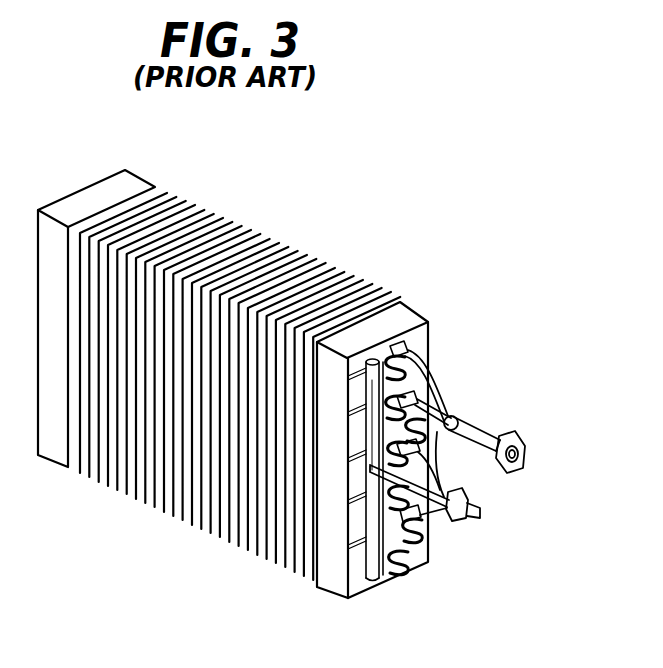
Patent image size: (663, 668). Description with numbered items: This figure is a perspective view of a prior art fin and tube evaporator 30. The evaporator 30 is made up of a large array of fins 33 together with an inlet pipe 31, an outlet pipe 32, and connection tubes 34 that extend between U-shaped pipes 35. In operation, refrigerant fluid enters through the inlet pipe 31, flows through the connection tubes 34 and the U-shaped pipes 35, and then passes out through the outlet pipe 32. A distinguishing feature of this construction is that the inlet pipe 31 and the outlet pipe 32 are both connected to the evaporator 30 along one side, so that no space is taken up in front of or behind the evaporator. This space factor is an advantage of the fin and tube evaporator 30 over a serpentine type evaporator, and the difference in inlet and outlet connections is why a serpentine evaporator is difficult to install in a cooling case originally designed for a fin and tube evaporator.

The fin and tube evaporator 30 is at (295, 393).
The inlet pipe 31 is at (488, 430).
The outlet pipe 32 is at (443, 517).
The fins 33 is at (350, 287).
The connection tubes 34 is at (348, 548).
The U-shaped pipes 35 is at (410, 570).